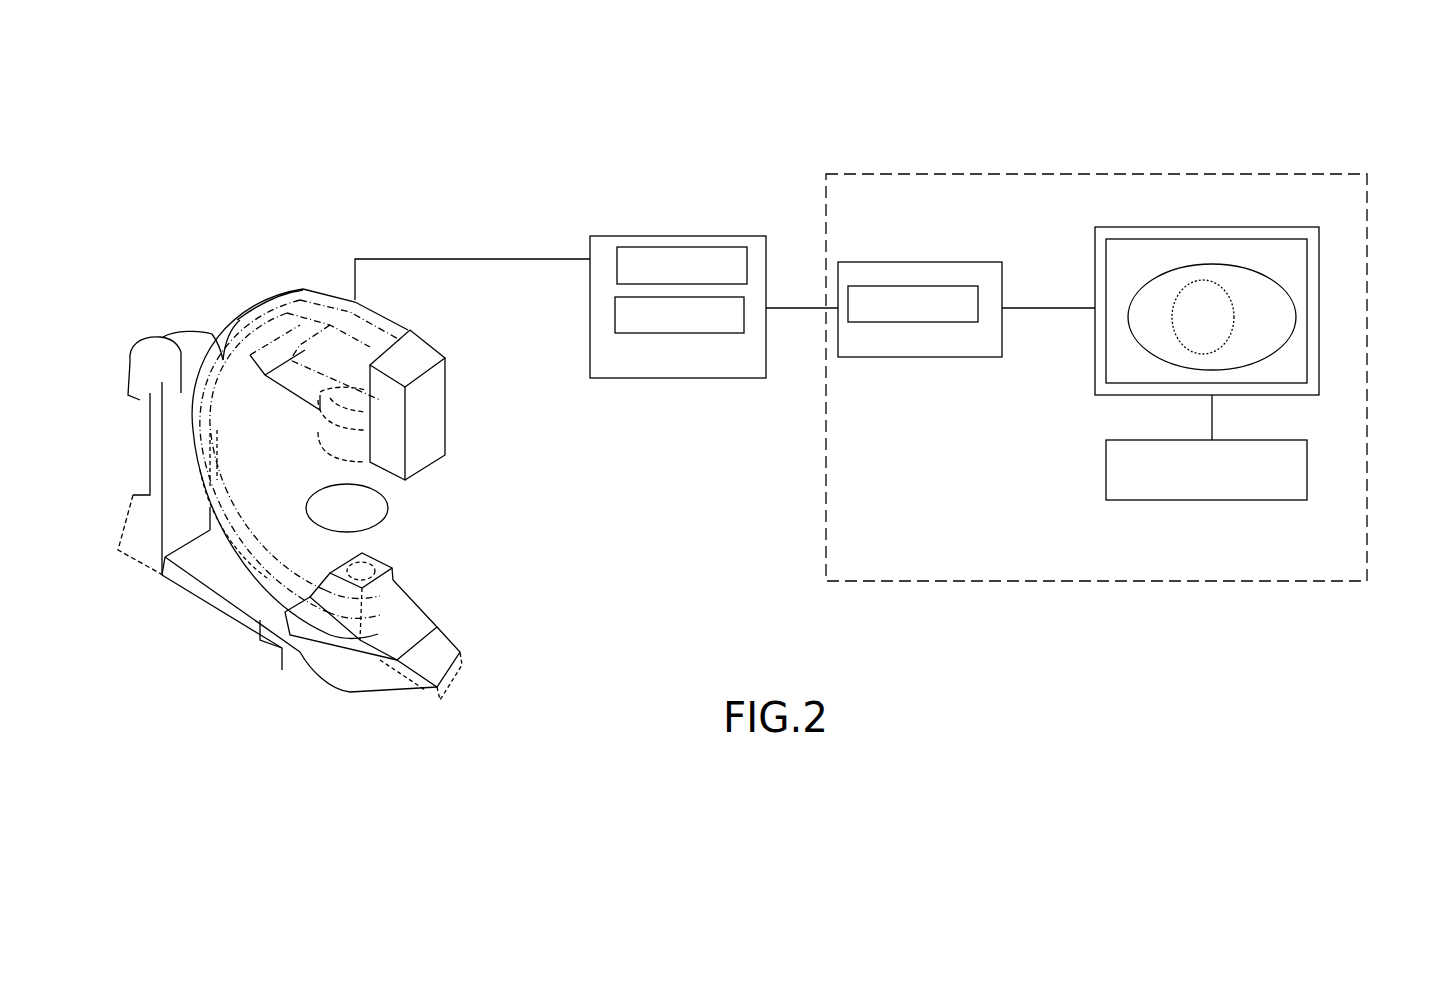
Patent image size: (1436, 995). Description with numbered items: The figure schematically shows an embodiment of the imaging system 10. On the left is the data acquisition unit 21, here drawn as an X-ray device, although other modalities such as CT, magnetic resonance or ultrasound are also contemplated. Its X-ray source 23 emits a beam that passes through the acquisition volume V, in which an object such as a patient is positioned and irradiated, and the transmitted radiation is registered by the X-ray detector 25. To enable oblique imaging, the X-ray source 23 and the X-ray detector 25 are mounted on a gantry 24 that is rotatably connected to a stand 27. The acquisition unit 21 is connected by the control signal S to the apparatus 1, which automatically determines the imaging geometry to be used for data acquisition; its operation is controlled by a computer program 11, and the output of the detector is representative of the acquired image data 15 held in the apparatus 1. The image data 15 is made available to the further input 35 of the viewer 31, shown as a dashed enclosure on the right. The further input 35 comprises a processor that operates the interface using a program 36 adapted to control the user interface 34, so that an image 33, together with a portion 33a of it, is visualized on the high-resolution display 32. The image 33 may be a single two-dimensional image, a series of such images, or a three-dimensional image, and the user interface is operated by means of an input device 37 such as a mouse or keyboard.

The imaging system 10 is at (570, 81).
The data acquisition unit 21 is at (157, 288).
The X-ray source 23 is at (380, 603).
The gantry 24 is at (275, 567).
The X-ray detector 25 is at (370, 360).
The stand 27 is at (146, 538).
The acquisition volume V is at (388, 507).
The control signal S is at (466, 259).
The apparatus 1 is at (639, 275).
The computer program 11 is at (656, 252).
The image data 15 is at (615, 322).
The viewer 31 is at (1125, 175).
The further input 35 is at (920, 240).
The program 36 is at (885, 285).
The high-resolution display 32 is at (1231, 319).
The image 33 is at (1166, 334).
The displayed region of interest 33a is at (1217, 350).
The user interface 34 is at (1307, 335).
The input device 37 is at (1106, 488).